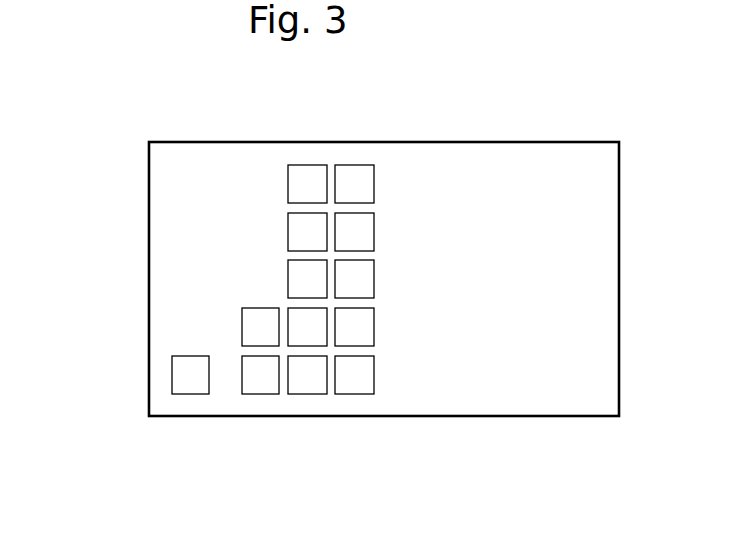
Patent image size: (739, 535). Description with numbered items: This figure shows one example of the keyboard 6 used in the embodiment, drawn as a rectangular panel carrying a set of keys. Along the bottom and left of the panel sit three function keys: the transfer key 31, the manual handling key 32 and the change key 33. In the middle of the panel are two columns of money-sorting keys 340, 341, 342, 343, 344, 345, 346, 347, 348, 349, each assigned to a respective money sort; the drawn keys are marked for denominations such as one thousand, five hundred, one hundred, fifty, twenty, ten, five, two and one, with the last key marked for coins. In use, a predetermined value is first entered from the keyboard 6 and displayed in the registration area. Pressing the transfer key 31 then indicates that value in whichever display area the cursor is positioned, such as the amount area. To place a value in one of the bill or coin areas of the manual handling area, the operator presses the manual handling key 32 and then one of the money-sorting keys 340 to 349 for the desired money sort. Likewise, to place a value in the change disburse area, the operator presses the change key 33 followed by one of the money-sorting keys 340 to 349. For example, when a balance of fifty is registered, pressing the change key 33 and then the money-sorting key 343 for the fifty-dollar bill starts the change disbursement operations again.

The keyboard 6 is at (585, 142).
The transfer key 31 is at (185, 394).
The manual handling key 32 is at (242, 325).
The change key 33 is at (268, 394).
The money-sorting key 340 is at (315, 165).
The money-sorting key 341 is at (288, 218).
The money-sorting key 342 is at (288, 267).
The money-sorting key 343 is at (297, 308).
The money-sorting key 344 is at (318, 394).
The money-sorting key 345 is at (365, 165).
The money-sorting key 346 is at (374, 222).
The money-sorting key 347 is at (374, 273).
The money-sorting key 348 is at (374, 322).
The money-sorting key 349 is at (374, 376).